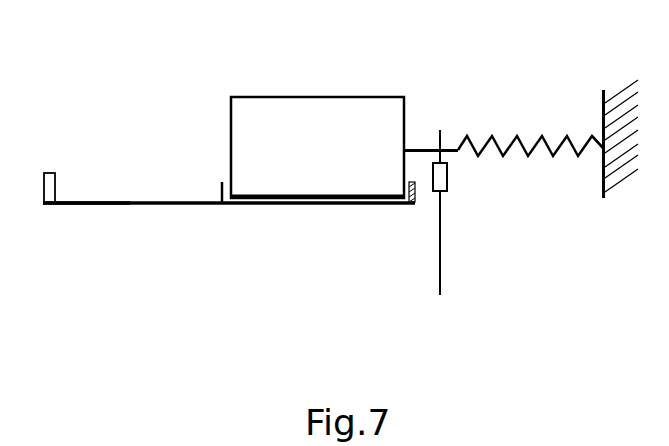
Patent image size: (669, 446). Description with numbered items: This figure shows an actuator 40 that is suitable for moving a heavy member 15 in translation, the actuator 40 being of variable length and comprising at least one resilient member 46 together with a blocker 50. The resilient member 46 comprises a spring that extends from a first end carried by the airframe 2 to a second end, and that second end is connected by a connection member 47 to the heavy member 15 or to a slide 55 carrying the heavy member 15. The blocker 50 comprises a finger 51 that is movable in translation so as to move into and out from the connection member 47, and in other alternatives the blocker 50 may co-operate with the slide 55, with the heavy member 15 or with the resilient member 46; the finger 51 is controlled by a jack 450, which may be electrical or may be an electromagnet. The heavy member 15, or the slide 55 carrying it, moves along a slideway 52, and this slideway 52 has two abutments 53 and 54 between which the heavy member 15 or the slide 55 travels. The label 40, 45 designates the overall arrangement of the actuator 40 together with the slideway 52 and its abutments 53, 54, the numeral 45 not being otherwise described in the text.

The airframe 2 is at (602, 105).
The heavy member 15 is at (332, 162).
The actuator 40 is at (566, 196).
The carriage assembly 45 is at (187, 307).
The resilient member 46 is at (552, 140).
The connection member 47 is at (450, 122).
The blocker 50 is at (463, 185).
The finger 51 is at (438, 138).
The slideway 52 is at (127, 205).
The abutment 53 is at (414, 190).
The abutment 54 is at (37, 214).
The slide 55 is at (220, 193).
The jack 450 is at (445, 192).